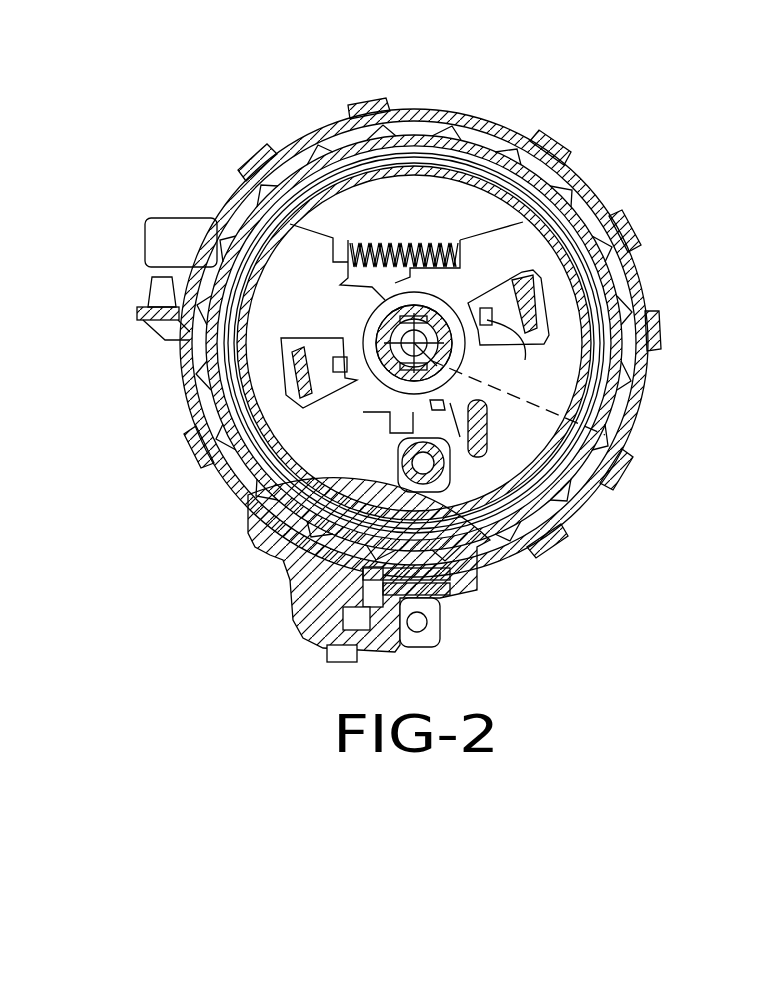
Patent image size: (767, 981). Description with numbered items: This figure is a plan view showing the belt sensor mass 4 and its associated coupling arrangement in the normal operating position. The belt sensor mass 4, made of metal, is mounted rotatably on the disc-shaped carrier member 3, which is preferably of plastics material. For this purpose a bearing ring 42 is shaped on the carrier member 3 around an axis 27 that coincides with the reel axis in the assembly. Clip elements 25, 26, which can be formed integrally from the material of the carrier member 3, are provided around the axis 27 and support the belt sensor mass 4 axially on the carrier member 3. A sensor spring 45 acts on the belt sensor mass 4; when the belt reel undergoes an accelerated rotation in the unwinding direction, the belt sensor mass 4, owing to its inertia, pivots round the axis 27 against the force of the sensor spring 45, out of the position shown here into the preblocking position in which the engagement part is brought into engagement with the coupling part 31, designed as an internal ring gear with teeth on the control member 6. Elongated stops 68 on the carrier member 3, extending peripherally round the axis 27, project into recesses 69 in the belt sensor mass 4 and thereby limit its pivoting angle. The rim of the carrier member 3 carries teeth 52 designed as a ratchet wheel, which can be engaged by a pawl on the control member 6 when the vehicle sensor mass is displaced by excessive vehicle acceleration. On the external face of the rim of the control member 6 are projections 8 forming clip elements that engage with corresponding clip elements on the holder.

The carrier member 3 is at (326, 205).
The belt sensor mass 4 is at (530, 236).
The control member 6 is at (495, 127).
The projections 8 is at (366, 100).
The clip element 25 is at (445, 400).
The clip element 26 is at (512, 356).
The axis 27 is at (608, 428).
The coupling part 31 is at (328, 490).
The bearing ring 42 is at (369, 332).
The sensor spring 45 is at (416, 246).
The teeth 52 is at (460, 137).
The elongated stops 68 is at (525, 298).
The recesses 69 is at (540, 327).